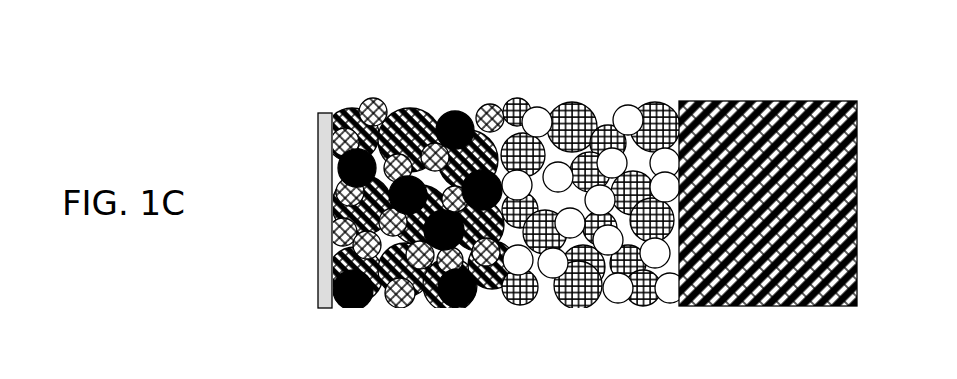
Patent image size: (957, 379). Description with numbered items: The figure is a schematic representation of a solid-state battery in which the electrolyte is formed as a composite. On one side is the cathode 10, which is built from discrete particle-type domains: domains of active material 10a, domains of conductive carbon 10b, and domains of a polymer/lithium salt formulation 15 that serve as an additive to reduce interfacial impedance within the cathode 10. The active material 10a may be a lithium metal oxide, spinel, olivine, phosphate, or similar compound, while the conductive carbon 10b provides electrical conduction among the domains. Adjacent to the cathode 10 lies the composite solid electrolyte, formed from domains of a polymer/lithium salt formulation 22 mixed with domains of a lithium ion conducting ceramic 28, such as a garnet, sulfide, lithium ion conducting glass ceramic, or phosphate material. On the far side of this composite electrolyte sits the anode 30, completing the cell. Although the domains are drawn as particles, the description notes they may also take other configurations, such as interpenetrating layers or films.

The cathode 10 is at (393, 88).
The active material domains 10a is at (432, 118).
The conductive carbon domains 10b is at (335, 170).
The polymer/lithium salt formulation domains 15 is at (347, 233).
The polymer/lithium salt formulation domains 22 is at (582, 125).
The lithium ion conducting ceramic domains 28 is at (652, 108).
The anode 30 is at (747, 88).